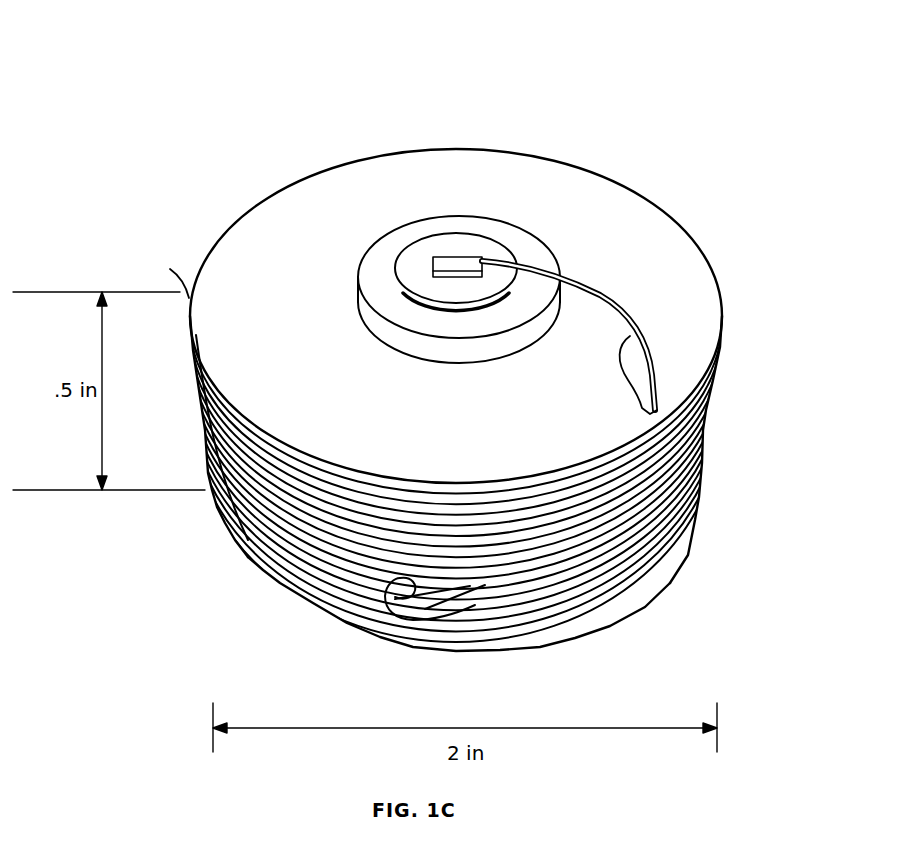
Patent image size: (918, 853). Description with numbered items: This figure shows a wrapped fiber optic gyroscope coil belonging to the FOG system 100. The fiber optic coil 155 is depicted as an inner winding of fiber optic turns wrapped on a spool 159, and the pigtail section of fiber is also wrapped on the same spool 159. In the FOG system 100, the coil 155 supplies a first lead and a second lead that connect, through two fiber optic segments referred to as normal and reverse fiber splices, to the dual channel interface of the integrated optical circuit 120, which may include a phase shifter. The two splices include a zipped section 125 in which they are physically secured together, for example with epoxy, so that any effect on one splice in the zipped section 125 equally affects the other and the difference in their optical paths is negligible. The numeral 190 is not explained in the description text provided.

The FOG system 100 is at (128, 36).
The integrated optical circuit 120 is at (461, 256).
The zipped section 125 is at (624, 333).
The fiber optic coil 155 is at (726, 448).
The spool 159 is at (287, 597).
The fiber end 190 is at (400, 588).